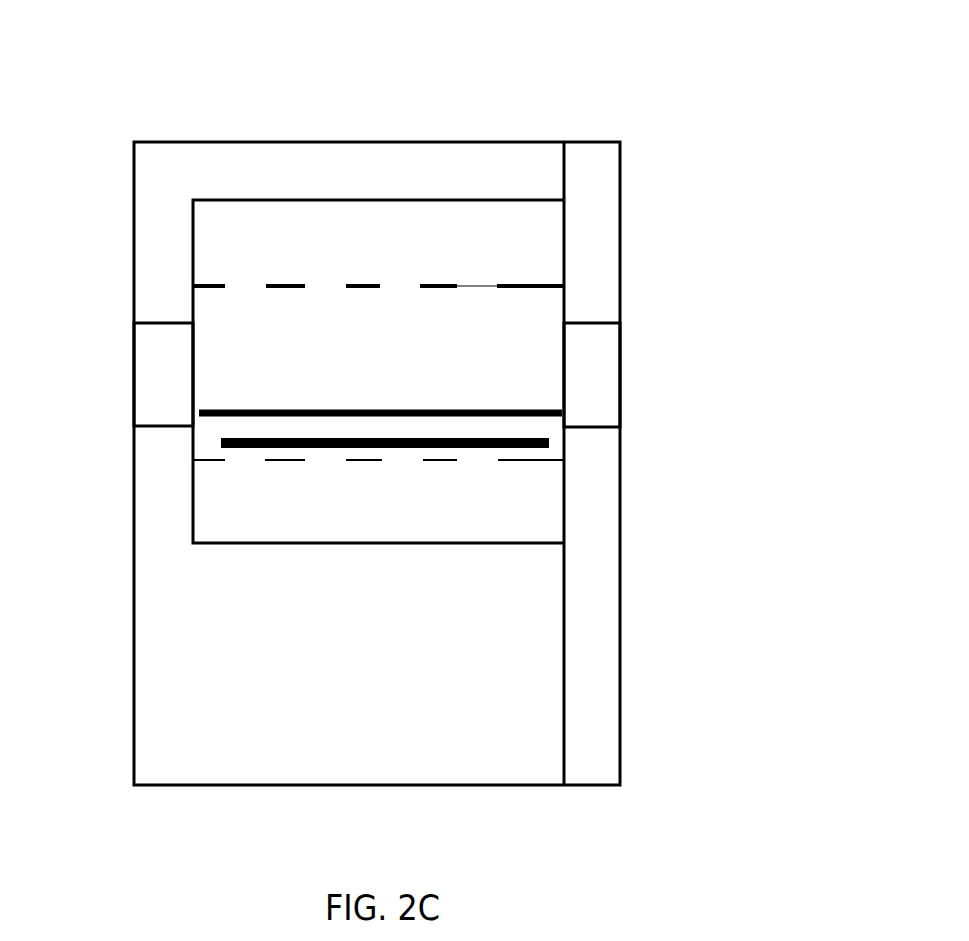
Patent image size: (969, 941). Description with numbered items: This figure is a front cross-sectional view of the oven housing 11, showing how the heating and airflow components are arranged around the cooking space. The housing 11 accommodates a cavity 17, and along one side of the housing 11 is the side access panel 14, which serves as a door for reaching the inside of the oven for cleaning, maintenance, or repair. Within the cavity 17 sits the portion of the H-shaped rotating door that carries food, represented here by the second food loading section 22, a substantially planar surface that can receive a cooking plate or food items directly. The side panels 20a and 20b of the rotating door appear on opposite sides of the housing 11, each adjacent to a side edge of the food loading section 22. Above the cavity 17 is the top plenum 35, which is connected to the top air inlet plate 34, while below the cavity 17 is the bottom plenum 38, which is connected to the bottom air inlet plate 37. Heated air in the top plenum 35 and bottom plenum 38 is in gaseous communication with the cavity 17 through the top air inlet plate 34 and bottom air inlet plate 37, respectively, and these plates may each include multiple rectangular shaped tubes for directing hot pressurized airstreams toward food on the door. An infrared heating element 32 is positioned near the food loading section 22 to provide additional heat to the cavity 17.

The housing 11 is at (323, 147).
The side access panel 14 is at (585, 223).
The cavity 17 is at (382, 345).
The side panel 20a is at (168, 397).
The side panel 20b is at (597, 388).
The second food loading section 22 is at (318, 404).
The infrared heating element 32 is at (219, 444).
The top air inlet plate 34 is at (433, 272).
The top plenum 35 is at (349, 261).
The bottom air inlet plate 37 is at (516, 470).
The bottom plenum 38 is at (410, 523).